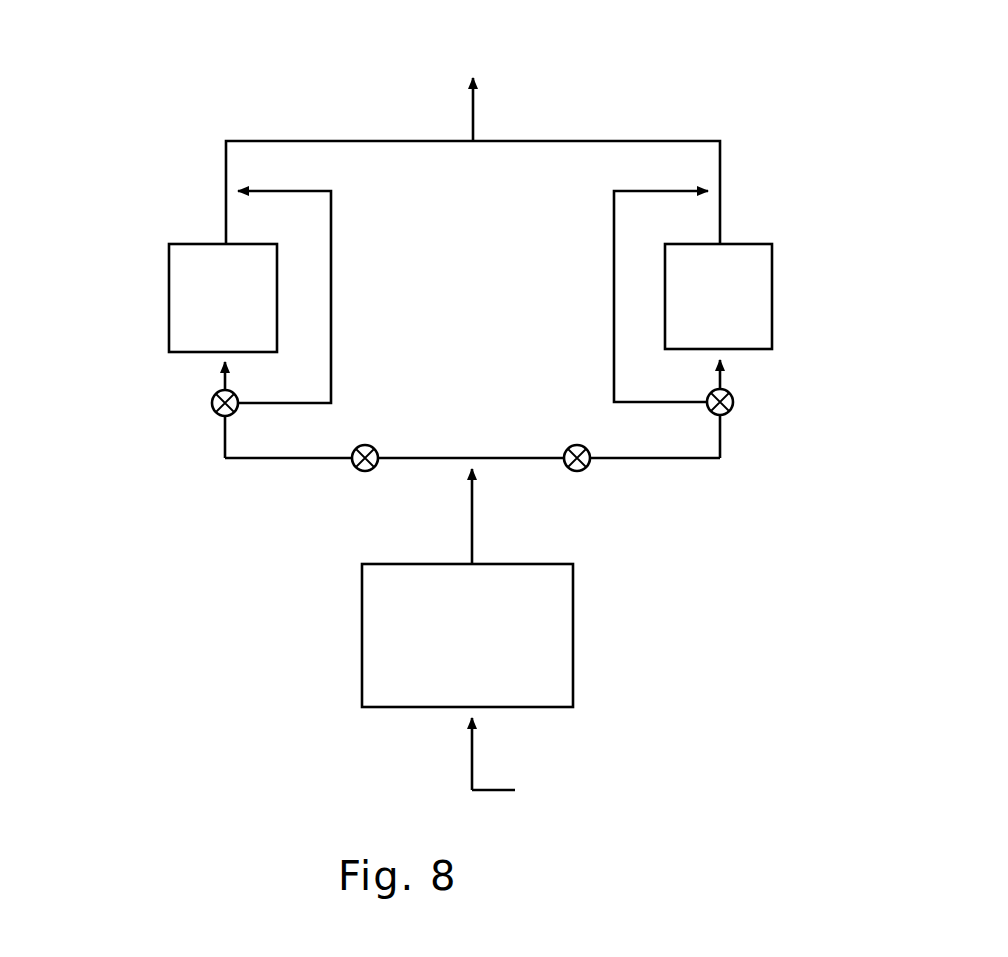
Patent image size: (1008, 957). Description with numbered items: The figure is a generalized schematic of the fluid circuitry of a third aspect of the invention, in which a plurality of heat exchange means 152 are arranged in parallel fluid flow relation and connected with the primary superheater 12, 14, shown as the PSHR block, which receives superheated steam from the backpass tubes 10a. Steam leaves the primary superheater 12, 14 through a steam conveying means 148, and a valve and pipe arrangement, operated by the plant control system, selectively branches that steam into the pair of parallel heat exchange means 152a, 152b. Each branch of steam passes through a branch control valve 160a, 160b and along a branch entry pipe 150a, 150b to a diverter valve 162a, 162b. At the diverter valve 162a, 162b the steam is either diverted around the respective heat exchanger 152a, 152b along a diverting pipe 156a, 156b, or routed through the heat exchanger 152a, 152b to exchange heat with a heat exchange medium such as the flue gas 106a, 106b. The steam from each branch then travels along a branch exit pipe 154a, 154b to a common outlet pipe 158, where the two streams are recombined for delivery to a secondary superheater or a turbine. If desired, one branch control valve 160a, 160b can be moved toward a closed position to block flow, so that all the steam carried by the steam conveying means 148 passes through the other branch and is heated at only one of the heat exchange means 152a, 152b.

The backpass tubes 10a is at (537, 754).
The second primary superheater 12 is at (467, 635).
The primary superheater 14 is at (497, 630).
The flue gas 106a is at (793, 296).
The flue gas 106b is at (160, 298).
The steam conveying means 148 is at (476, 527).
The branch entry pipe 150a is at (691, 458).
The branch entry pipe 150b is at (262, 458).
The heat exchange means 152 is at (482, 320).
The heat exchange means 152a is at (718, 296).
The heat exchange means 152b is at (223, 298).
The branch exit pipe 154a is at (595, 141).
The branch exit pipe 154b is at (318, 141).
The diverting pipe 156a is at (614, 232).
The diverting pipe 156b is at (331, 232).
The common outlet pipe 158 is at (474, 110).
The branch control valve 160a is at (576, 471).
The branch control valve 160b is at (362, 471).
The diverter valve 162a is at (734, 400).
The diverter valve 162b is at (210, 402).